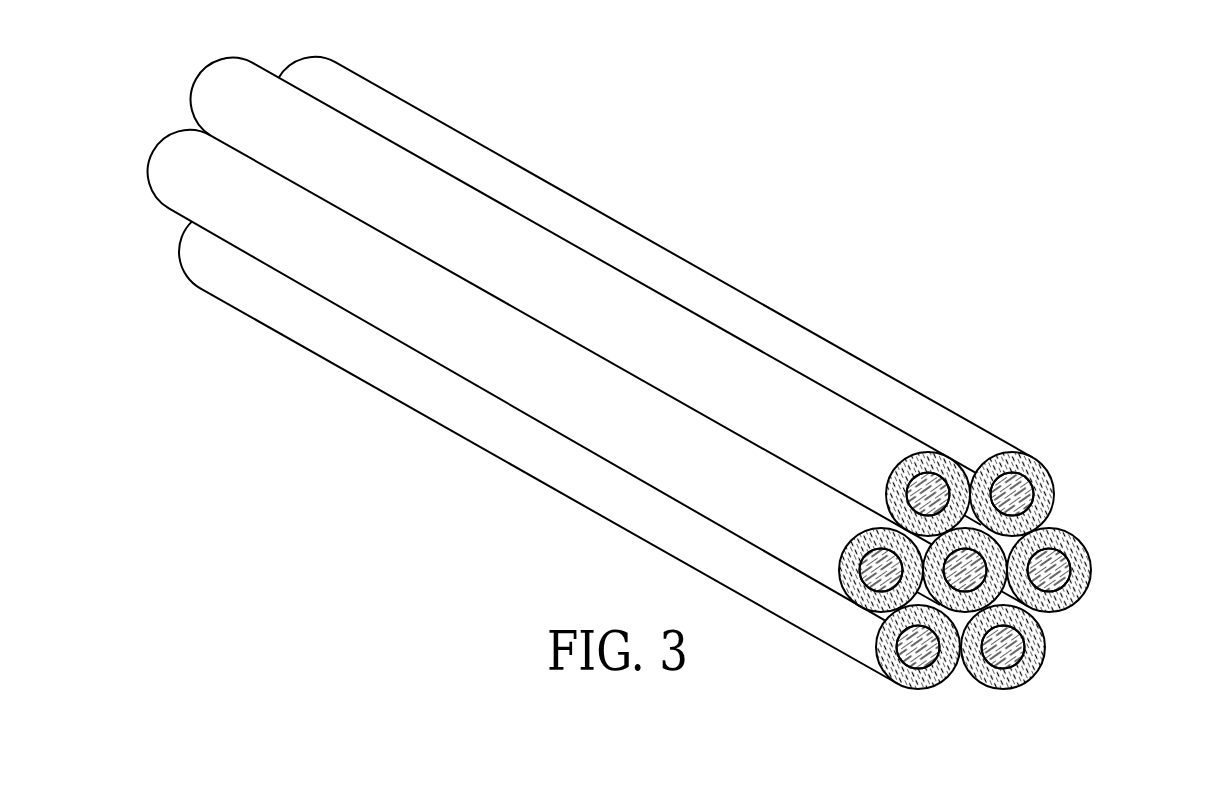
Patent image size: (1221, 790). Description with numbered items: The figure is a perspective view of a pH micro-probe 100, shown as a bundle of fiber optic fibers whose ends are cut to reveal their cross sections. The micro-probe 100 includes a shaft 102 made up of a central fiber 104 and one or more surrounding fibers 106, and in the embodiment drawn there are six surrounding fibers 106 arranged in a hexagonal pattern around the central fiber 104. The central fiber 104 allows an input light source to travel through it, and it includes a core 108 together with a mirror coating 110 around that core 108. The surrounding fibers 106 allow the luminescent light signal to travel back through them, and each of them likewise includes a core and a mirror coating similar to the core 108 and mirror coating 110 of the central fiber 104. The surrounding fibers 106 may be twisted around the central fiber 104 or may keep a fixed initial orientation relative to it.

The pH micro-probe 100 is at (1047, 208).
The shaft 102 is at (791, 226).
The central fiber 104 is at (1078, 497).
The surrounding fibers 106 is at (1083, 658).
The core 108 is at (1065, 565).
The mirror coating 110 is at (1083, 583).